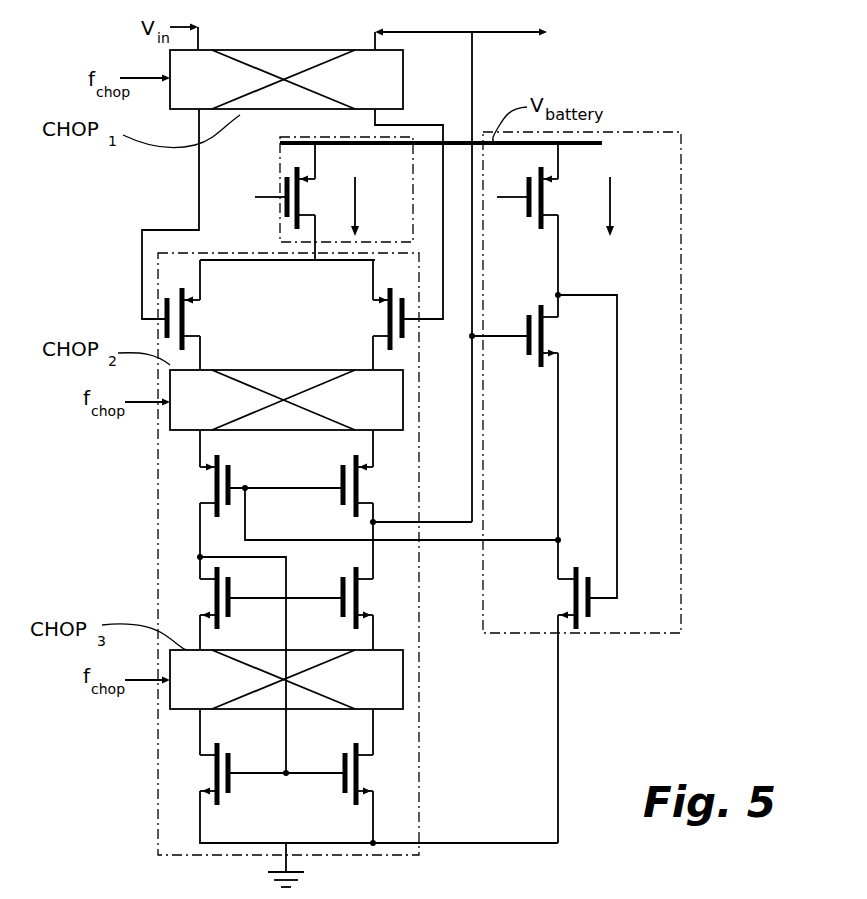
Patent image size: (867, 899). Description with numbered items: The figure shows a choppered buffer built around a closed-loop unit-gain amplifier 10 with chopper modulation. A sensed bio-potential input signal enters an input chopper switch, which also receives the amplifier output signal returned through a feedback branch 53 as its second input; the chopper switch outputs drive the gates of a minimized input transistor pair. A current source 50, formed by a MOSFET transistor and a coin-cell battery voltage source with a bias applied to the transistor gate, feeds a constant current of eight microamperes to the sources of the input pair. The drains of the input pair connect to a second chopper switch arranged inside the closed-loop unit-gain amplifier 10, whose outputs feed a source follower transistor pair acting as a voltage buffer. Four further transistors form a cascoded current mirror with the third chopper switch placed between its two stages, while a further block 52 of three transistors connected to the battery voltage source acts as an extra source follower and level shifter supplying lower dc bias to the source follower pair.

The closed-loop unit-gain amplifier 10 is at (158, 557).
The current source 50 is at (278, 232).
The output current limiting circuit 52 is at (683, 349).
The feedback branch 53 is at (477, 90).